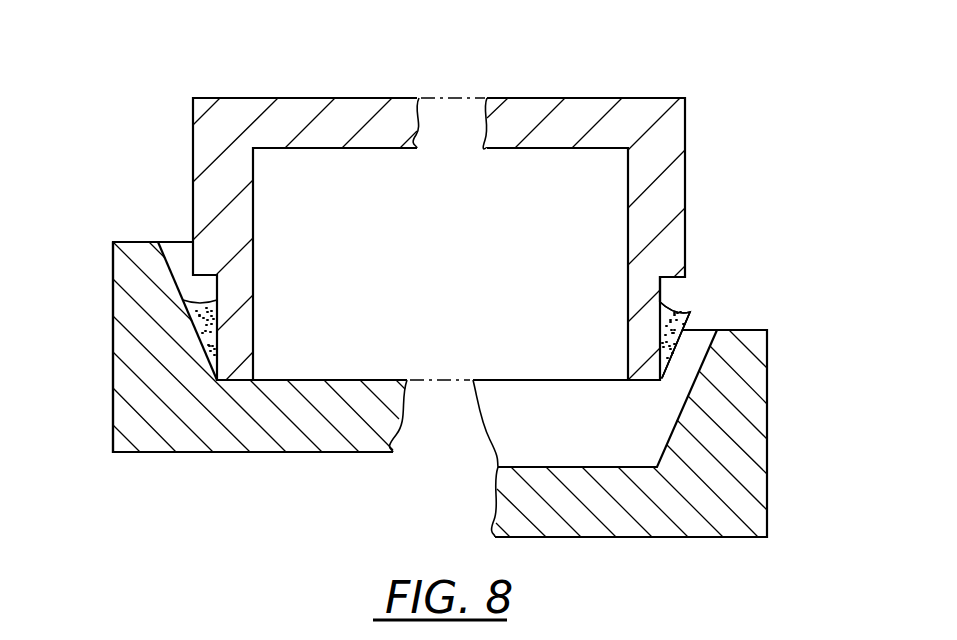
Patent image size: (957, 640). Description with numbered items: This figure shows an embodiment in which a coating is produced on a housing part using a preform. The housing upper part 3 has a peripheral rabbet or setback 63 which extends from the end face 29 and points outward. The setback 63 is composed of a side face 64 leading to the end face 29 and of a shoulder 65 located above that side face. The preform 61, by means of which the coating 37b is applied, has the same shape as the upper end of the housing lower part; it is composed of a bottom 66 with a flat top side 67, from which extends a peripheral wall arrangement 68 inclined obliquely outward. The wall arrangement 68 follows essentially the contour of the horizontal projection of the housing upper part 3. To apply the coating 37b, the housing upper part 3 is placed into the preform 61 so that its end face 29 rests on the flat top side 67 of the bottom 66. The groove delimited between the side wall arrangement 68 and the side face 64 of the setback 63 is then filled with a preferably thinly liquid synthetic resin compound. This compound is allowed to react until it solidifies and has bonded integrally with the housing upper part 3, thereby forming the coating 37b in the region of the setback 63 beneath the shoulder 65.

The housing upper part 3 is at (672, 23).
The end face 29 is at (563, 381).
The coating 37b is at (686, 324).
The preform 61 is at (136, 454).
The setback 63 is at (668, 265).
The side face 64 is at (661, 337).
The shoulder 65 is at (672, 278).
The bottom 66 is at (302, 437).
The flat top side 67 is at (341, 381).
The wall arrangement 68 is at (686, 393).